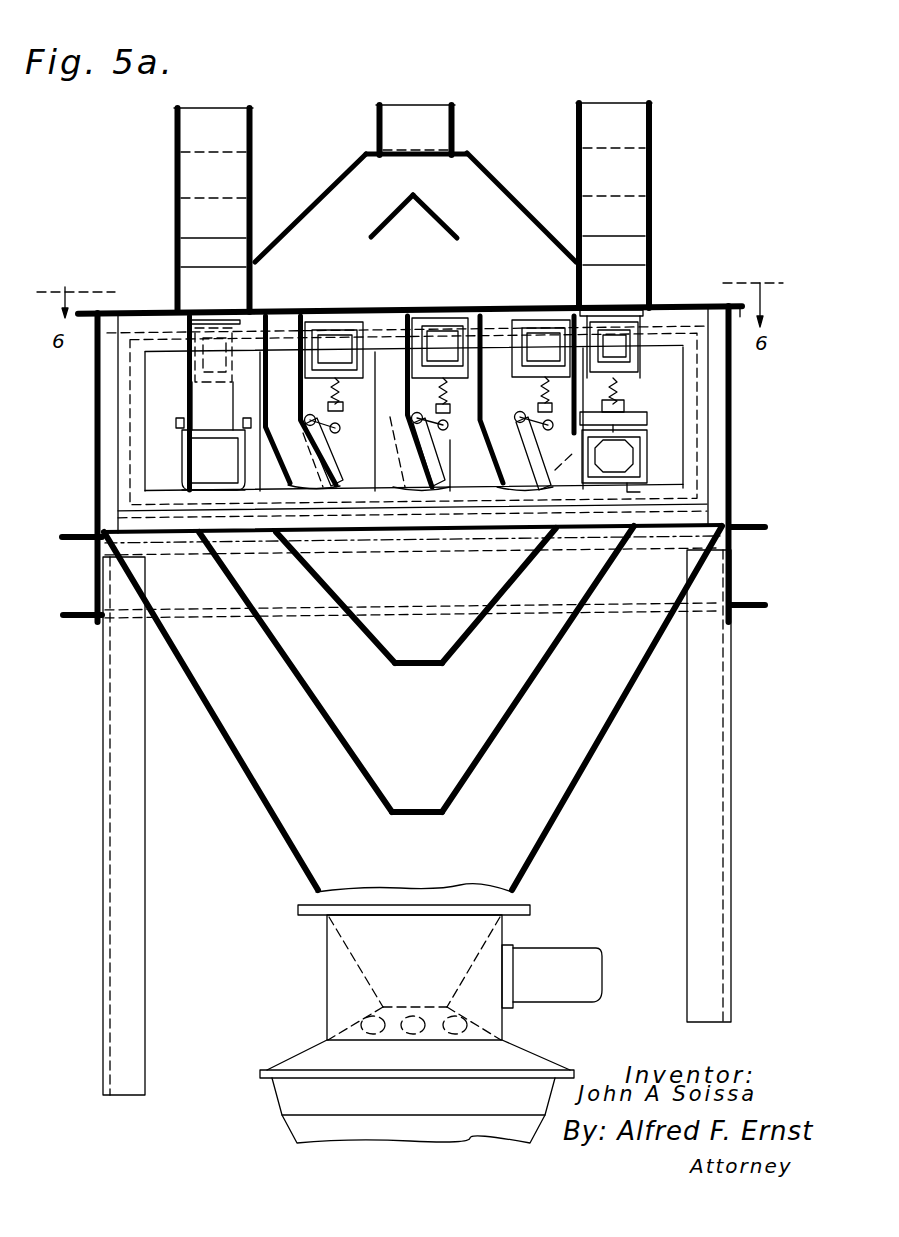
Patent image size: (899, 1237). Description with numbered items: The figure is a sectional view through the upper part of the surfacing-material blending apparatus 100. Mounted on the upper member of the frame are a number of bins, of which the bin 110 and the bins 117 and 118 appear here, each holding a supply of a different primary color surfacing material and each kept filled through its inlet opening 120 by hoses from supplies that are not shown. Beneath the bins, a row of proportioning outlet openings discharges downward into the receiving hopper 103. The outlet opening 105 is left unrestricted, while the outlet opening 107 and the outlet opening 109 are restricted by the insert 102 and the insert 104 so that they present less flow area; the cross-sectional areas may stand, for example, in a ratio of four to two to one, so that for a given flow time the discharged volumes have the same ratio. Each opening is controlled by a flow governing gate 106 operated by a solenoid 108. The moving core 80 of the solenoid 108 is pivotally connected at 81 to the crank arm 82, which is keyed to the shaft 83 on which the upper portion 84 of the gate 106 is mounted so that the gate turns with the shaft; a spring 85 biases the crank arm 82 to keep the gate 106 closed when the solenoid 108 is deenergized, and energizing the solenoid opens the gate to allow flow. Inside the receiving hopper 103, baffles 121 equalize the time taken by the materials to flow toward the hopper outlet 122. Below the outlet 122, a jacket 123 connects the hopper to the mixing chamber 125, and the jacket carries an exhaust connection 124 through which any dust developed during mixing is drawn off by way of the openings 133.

The apparatus 100 is at (100, 897).
The insert 102 is at (339, 501).
The receiving hopper 103 is at (570, 818).
The insert 104 is at (414, 498).
The outlet opening 105 is at (559, 480).
The flow governing gate 106 is at (457, 483).
The outlet opening 107 is at (288, 443).
The solenoid 108 is at (430, 330).
The outlet opening 109 is at (385, 443).
The bin 110 is at (488, 194).
The bin 117 is at (636, 174).
The bin 118 is at (195, 180).
The inlet opening 120 is at (219, 118).
The baffle 121 is at (452, 666).
The outlet 122 is at (398, 973).
The jacket 123 is at (327, 1004).
The exhaust connection 124 is at (590, 953).
The mixing chamber 125 is at (268, 1095).
The openings 133 is at (446, 1034).
The moving core 80 is at (645, 396).
The pivotal connection 81 is at (492, 422).
The crank arm 82 is at (439, 453).
The shaft 83 is at (180, 422).
The upper portion of gate 84 is at (185, 460).
The spring 85 is at (334, 392).